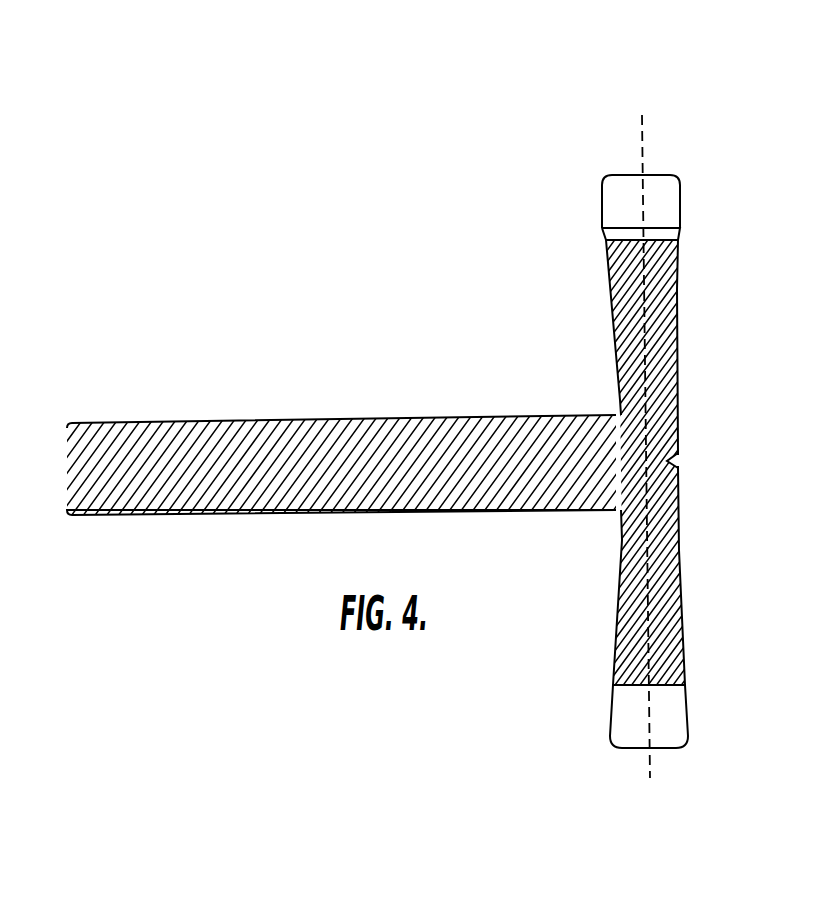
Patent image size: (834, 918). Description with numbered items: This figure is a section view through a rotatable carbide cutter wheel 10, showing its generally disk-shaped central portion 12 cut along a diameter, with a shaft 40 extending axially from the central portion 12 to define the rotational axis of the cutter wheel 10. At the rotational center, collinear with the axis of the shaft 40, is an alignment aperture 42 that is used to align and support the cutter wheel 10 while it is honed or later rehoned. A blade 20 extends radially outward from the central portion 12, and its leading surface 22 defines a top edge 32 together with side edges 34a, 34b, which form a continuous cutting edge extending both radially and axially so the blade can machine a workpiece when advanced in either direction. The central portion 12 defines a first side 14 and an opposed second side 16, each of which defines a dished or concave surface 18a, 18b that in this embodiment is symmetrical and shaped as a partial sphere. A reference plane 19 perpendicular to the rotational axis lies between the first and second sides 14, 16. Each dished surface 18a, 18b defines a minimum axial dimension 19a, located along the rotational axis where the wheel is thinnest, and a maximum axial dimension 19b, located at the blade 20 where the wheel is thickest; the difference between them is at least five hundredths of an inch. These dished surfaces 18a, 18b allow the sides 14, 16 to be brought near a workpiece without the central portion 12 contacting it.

The cutter wheel 10 is at (198, 280).
The central portion 12 is at (617, 370).
The first side 14 is at (678, 285).
The second side 16 is at (608, 277).
The dished surface 18a is at (677, 332).
The dished surface 18b is at (613, 332).
The reference plane 19 is at (643, 116).
The minimum axial dimension 19a is at (678, 465).
The maximum axial dimension 19b is at (687, 183).
The blade 20 is at (648, 174).
The leading surface 22 is at (606, 178).
The top edge 32 is at (622, 174).
The side edge 34a is at (682, 205).
The side edge 34b is at (602, 205).
The shaft 40 is at (155, 422).
The alignment aperture 42 is at (675, 453).